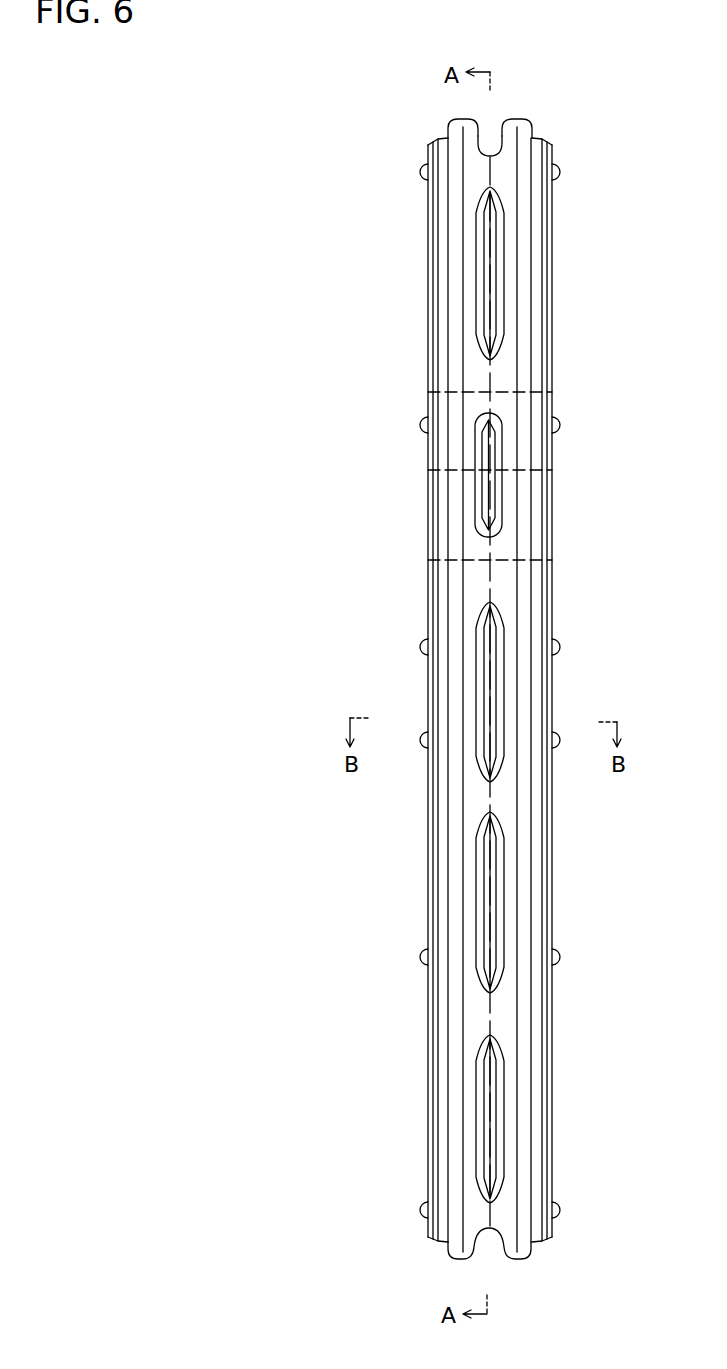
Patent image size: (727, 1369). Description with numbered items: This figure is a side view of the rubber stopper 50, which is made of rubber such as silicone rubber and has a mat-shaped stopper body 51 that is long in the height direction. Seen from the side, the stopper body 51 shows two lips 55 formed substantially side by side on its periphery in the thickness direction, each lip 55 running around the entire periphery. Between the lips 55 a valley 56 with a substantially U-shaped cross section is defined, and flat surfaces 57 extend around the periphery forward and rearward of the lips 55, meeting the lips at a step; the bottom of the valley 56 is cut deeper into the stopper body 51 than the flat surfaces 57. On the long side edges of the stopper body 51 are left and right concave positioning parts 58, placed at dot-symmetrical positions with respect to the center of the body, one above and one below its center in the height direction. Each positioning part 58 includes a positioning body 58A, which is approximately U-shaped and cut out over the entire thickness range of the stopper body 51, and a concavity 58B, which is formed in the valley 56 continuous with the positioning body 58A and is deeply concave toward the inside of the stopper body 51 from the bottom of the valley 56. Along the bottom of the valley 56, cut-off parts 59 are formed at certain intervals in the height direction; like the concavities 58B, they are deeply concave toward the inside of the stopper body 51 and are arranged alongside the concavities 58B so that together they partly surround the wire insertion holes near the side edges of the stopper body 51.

The rubber stopper 50 is at (552, 293).
The stopper body 51 is at (531, 350).
The lips 55 is at (457, 1258).
The valley 56 is at (491, 150).
The flat surfaces 57 is at (447, 136).
The positioning parts 58 is at (650, 484).
The positioning body 58A is at (536, 553).
The concavity 58B is at (488, 504).
The cut-off parts 59 is at (491, 268).